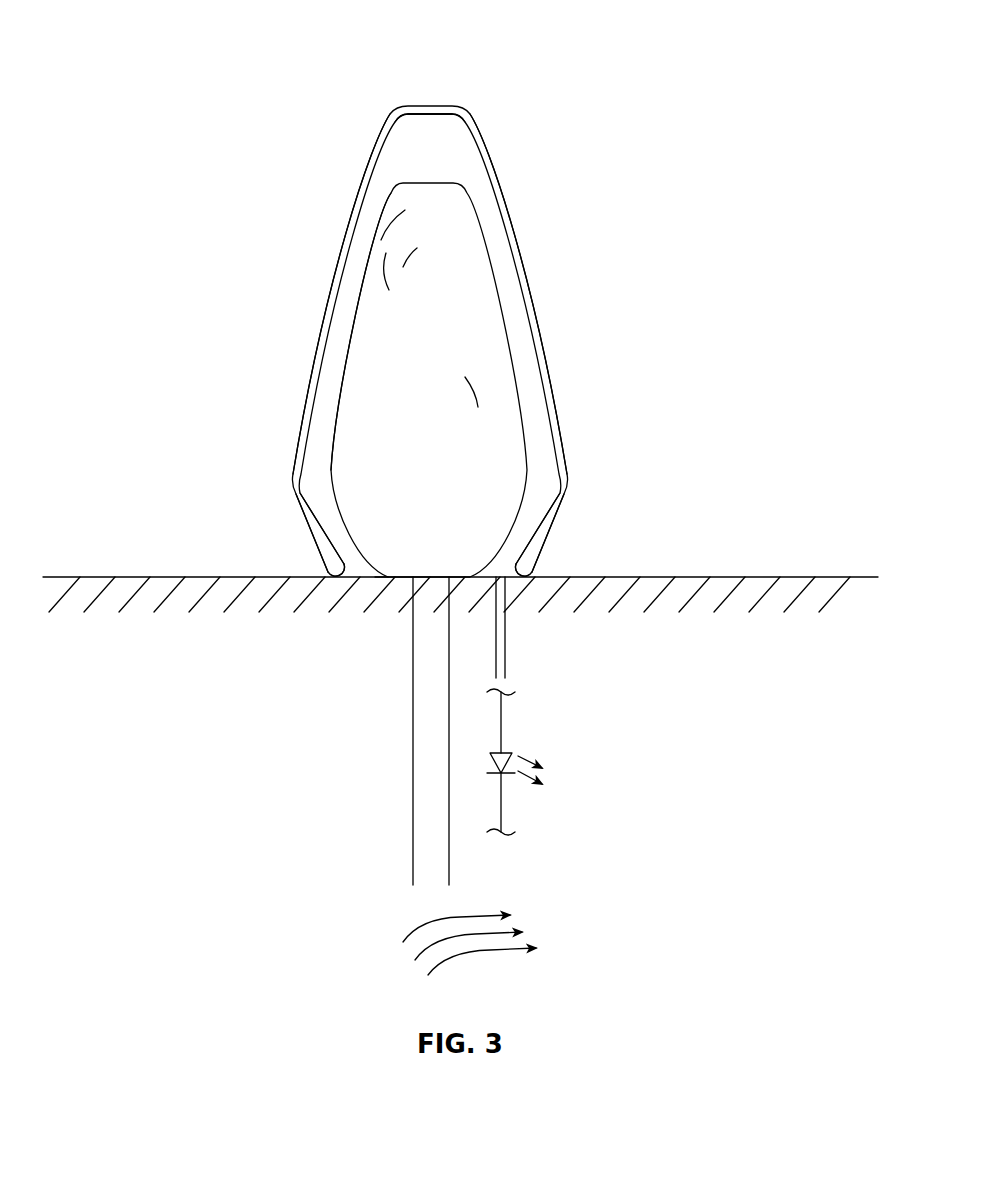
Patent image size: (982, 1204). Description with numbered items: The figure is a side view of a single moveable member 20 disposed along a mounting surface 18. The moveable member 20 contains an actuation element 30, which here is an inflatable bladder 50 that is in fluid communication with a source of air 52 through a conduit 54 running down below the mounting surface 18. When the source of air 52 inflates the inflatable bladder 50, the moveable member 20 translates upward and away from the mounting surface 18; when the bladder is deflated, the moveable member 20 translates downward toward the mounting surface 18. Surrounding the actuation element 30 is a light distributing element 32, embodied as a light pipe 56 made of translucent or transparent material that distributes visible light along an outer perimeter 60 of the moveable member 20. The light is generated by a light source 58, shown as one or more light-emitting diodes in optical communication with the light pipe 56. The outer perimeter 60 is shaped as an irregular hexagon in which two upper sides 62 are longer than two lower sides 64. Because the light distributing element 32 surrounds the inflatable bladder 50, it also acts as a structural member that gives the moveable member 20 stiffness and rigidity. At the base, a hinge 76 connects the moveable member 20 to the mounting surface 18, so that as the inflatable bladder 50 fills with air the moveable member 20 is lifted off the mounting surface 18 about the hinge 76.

The mounting surface 18 is at (782, 577).
The moveable member 20 is at (549, 45).
The actuation element 30 is at (363, 355).
The light distributing element 32 is at (462, 150).
The inflatable bladder 50 is at (343, 470).
The source of air 52 is at (385, 963).
The conduit 54 is at (420, 756).
The light pipe 56 is at (430, 139).
The light source 58 is at (524, 801).
The outer perimeter 60 is at (508, 194).
The upper sides 62 is at (347, 209).
The lower sides 64 is at (312, 536).
The hinge 76 is at (372, 582).